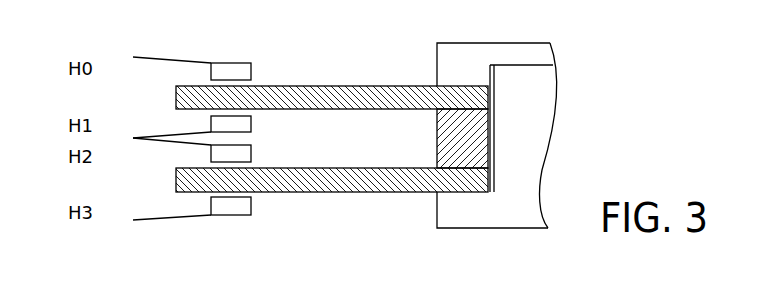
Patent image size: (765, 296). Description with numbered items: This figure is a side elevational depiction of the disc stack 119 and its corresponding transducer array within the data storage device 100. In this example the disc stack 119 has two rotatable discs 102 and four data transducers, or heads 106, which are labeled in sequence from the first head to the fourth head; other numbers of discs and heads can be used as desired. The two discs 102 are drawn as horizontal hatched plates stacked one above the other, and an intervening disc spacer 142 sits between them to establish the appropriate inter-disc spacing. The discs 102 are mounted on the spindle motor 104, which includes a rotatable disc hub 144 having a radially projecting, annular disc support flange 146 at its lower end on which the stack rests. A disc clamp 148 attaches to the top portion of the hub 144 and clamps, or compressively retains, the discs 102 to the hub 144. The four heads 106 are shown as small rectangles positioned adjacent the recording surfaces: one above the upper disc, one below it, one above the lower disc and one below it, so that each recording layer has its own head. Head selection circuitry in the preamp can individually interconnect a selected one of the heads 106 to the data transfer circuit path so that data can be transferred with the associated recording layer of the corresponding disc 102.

The print head 100 is at (41, 293).
The rotatable disc 102 is at (331, 86).
The spindle motor 104 is at (552, 151).
The data transducer (head) 106 is at (231, 63).
The disc stack 119 is at (147, 31).
The disc spacer 142 is at (437, 138).
The disc hub 144 is at (541, 106).
The disc support flange 146 is at (451, 217).
The disc clamp 148 is at (482, 50).